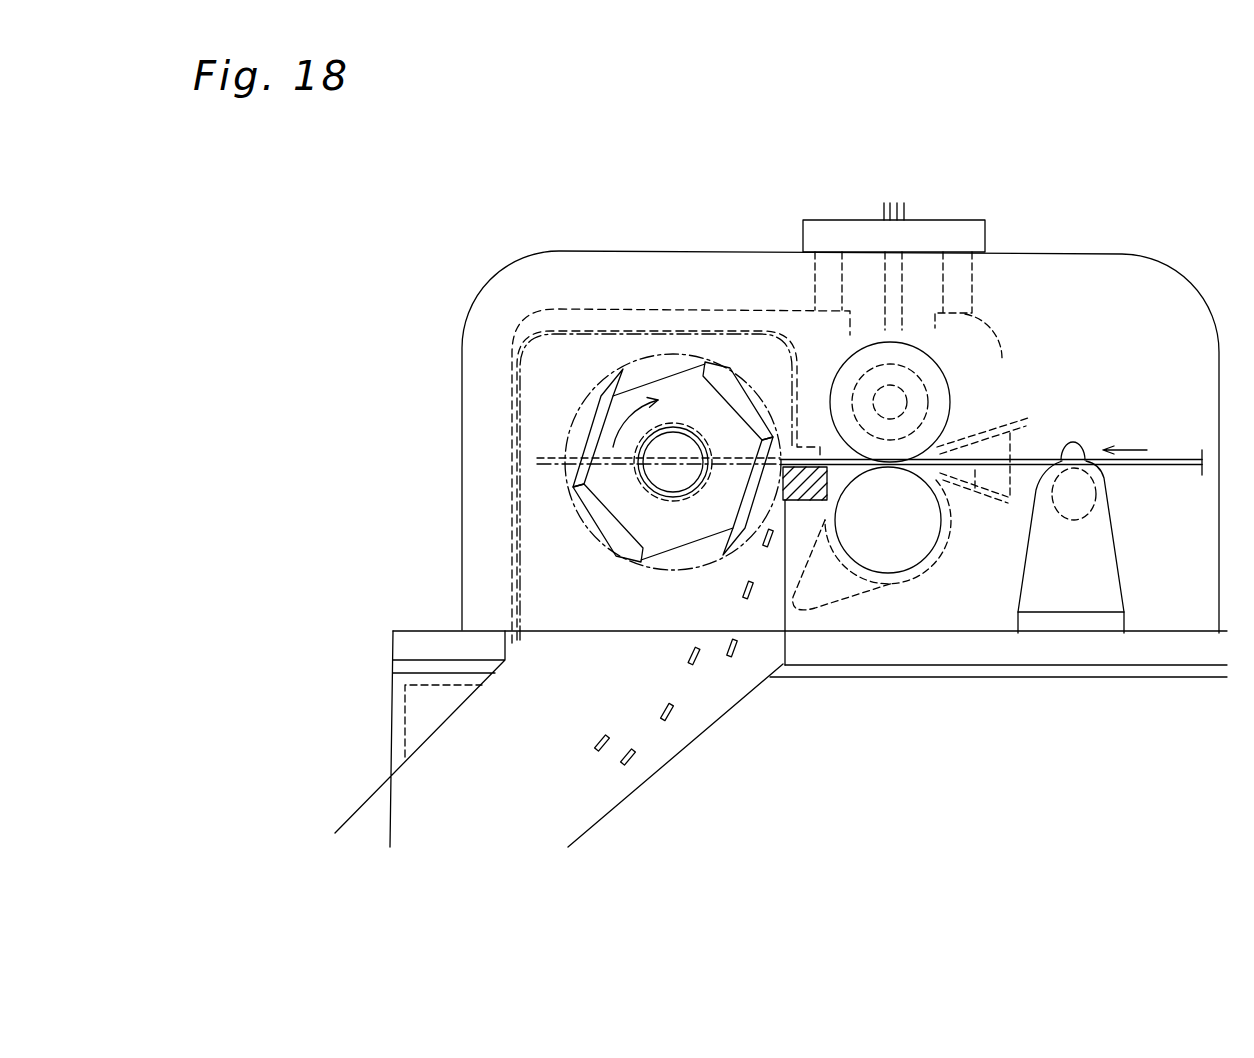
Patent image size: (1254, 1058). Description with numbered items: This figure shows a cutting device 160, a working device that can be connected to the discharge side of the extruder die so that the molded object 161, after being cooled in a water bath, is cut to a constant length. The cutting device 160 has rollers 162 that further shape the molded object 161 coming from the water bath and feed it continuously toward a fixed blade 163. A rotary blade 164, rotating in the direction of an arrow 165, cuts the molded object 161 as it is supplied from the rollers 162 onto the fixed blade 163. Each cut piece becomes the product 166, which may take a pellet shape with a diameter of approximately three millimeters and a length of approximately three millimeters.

The cutting device 160 is at (510, 236).
The molded object 161 is at (1040, 458).
The rollers 162 is at (922, 508).
The fixed blade 163 is at (813, 465).
The rotary blade 164 is at (597, 421).
The arrow 165 is at (633, 413).
The product 166 is at (690, 655).